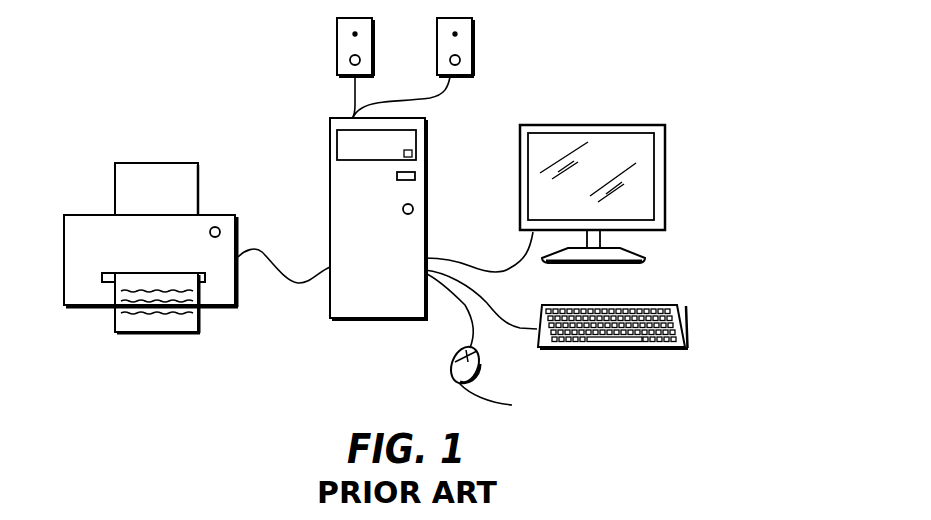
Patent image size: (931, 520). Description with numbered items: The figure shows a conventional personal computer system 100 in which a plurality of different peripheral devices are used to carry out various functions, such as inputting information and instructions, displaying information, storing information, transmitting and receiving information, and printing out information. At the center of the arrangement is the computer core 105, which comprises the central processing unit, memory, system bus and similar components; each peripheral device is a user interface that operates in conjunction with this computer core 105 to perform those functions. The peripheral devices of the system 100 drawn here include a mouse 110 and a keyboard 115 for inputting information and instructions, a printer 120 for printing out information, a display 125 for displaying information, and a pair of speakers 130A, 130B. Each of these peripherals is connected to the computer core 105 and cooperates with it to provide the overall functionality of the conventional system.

The personal computer system 100 is at (773, 37).
The computer core 105 is at (365, 318).
The mouse 110 is at (490, 346).
The keyboard 115 is at (686, 330).
The printer 120 is at (75, 215).
The display 125 is at (665, 177).
The speaker 130A is at (337, 50).
The speaker 130B is at (473, 52).